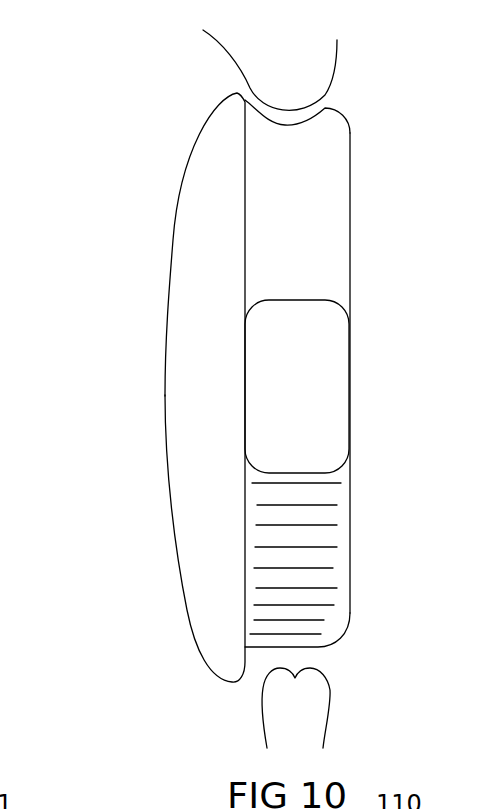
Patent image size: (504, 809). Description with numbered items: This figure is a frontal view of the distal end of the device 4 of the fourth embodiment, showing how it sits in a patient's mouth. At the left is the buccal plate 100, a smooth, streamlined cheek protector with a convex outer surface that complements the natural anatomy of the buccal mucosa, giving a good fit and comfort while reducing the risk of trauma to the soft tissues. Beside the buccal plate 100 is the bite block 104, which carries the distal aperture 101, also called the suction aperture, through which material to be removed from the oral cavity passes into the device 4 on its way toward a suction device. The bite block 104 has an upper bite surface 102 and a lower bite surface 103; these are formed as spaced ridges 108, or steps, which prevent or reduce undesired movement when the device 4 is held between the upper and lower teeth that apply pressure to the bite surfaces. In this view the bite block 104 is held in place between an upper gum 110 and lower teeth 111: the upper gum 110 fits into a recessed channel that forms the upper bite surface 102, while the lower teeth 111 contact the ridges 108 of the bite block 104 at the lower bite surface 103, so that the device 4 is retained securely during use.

The device 4 is at (102, 553).
The buccal plate 100 is at (175, 395).
The distal aperture 101 is at (332, 372).
The upper bite surface 102 is at (315, 123).
The lower bite surface 103 is at (322, 647).
The bite block 104 is at (330, 500).
The ridges 108 is at (332, 562).
The upper gum 110 is at (253, 44).
The lower teeth 111 is at (257, 740).